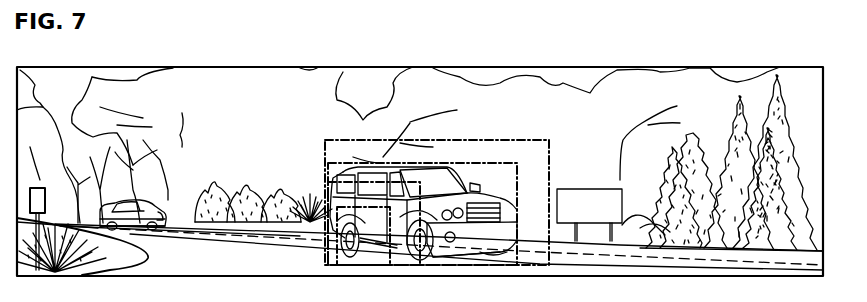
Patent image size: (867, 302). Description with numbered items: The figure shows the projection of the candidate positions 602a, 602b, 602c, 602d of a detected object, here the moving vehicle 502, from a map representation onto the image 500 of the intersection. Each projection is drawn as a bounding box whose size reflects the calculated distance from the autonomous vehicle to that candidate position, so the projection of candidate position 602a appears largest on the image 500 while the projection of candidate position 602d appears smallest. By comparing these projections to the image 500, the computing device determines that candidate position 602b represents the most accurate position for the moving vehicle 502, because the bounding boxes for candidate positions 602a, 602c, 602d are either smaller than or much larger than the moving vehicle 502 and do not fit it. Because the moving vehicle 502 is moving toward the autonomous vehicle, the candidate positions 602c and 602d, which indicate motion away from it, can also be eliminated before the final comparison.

The image 500 is at (791, 67).
The moving vehicle 502 is at (438, 162).
The candidate position 602a is at (549, 246).
The candidate position 602b is at (551, 139).
The candidate position 602c is at (326, 163).
The candidate position 602d is at (326, 187).